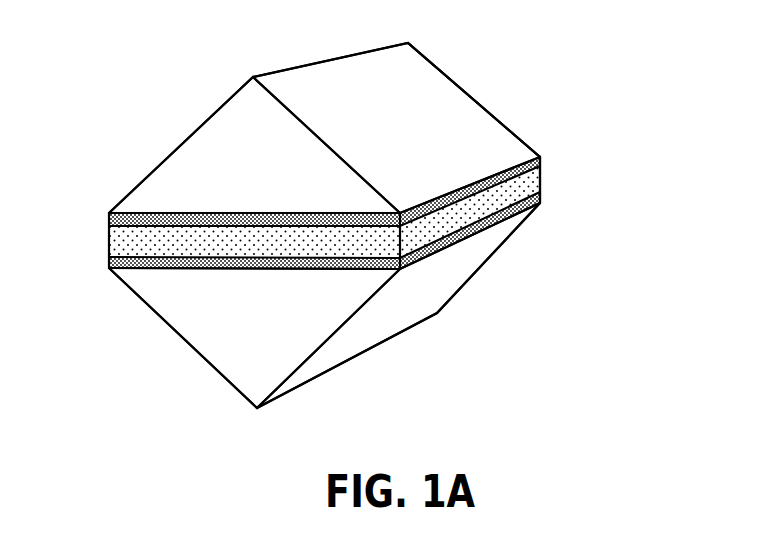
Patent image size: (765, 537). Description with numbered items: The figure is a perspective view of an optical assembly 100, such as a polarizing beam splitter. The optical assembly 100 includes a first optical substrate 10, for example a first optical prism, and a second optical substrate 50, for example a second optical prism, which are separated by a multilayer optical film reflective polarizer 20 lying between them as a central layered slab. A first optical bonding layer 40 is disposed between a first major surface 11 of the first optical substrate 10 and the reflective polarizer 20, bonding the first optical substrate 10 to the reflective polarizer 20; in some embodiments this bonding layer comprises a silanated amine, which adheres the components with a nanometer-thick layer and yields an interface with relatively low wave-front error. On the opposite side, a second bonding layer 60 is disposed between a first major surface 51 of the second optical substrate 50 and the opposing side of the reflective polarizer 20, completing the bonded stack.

The optical assembly 100 is at (157, 88).
The first optical substrate 10 is at (318, 76).
The first major surface 11 is at (157, 212).
The multilayer optical film reflective polarizer 20 is at (108, 243).
The first optical bonding layer 40 is at (595, 123).
The second optical substrate 50 is at (395, 305).
The first major surface 51 is at (160, 273).
The second bonding layer 60 is at (593, 170).